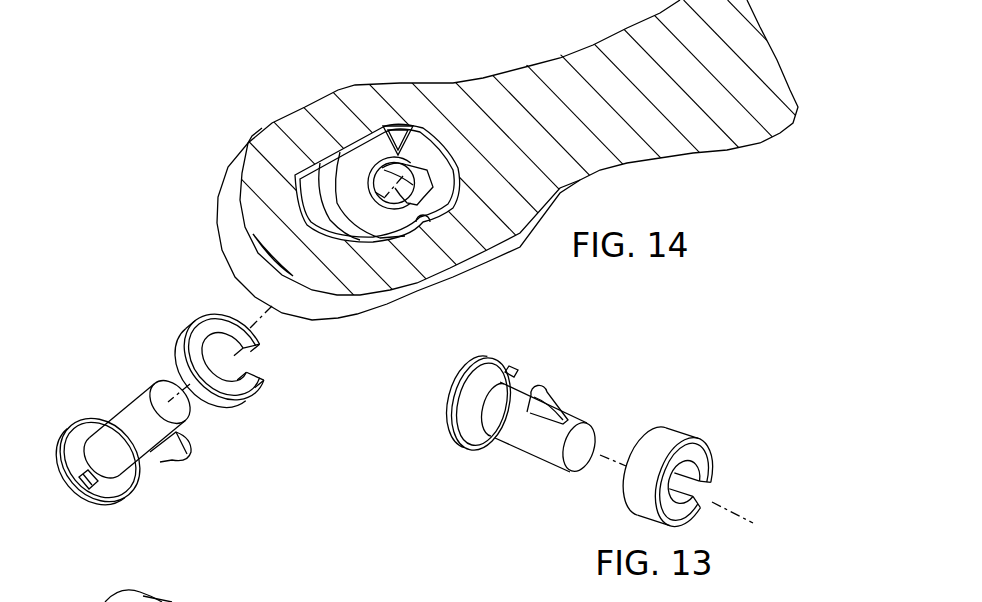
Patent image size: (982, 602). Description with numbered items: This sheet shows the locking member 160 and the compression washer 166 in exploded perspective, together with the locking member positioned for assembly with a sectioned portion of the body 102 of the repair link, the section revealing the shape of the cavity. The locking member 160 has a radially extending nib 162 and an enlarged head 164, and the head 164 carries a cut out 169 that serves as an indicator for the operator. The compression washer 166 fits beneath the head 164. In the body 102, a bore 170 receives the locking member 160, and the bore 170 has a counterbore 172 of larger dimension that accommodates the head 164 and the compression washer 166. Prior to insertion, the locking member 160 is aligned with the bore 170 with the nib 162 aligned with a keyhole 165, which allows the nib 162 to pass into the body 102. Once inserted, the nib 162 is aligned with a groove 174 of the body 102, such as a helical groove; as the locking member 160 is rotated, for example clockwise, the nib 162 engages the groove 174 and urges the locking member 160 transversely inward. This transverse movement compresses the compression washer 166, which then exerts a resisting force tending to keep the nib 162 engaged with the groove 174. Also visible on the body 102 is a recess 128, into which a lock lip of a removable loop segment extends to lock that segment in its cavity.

In FIG. 14, the body 102 is at (484, 78).
In FIG. 14, the recess 128 is at (207, 601).
In FIG. 14, the locking member 160 is at (125, 413).
In FIG. 13, the locking member 160 is at (527, 442).
In FIG. 14, the nib 162 is at (190, 453).
In FIG. 13, the nib 162 is at (543, 390).
In FIG. 14, the head 164 is at (125, 500).
In FIG. 13, the head 164 is at (452, 408).
In FIG. 14, the keyhole 165 is at (432, 201).
In FIG. 14, the compression washer 166 is at (250, 401).
In FIG. 13, the compression washer 166 is at (672, 437).
In FIG. 14, the cut out 169 is at (90, 489).
In FIG. 13, the cut out 169 is at (509, 371).
In FIG. 14, the bore 170 is at (398, 204).
In FIG. 14, the counterbore 172 is at (425, 222).
In FIG. 14, the groove 174 is at (426, 176).